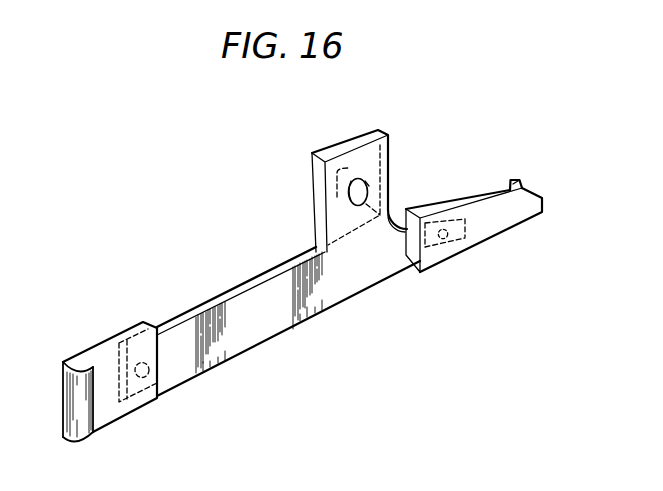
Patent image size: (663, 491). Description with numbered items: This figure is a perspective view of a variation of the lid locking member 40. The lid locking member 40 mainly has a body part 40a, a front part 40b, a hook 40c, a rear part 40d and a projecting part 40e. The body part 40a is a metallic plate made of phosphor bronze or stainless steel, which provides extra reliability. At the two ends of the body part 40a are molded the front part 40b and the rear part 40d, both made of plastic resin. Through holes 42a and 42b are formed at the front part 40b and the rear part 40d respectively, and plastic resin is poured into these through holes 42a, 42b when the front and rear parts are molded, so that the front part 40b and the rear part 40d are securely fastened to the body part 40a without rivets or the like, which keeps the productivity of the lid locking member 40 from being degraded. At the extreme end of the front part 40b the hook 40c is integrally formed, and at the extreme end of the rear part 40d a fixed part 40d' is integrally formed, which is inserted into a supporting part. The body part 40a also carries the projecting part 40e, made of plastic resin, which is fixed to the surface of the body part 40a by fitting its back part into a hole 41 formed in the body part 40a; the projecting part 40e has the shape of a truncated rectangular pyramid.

The lid locking member 40 is at (124, 270).
The body part 40a is at (237, 313).
The front part 40b is at (476, 210).
The hook 40c is at (519, 179).
The rear part 40d is at (126, 406).
The fixed part 40d' is at (70, 426).
The projecting part 40e is at (312, 221).
The hole 41 is at (362, 207).
The through hole 42a is at (443, 240).
The through hole 42b is at (147, 374).